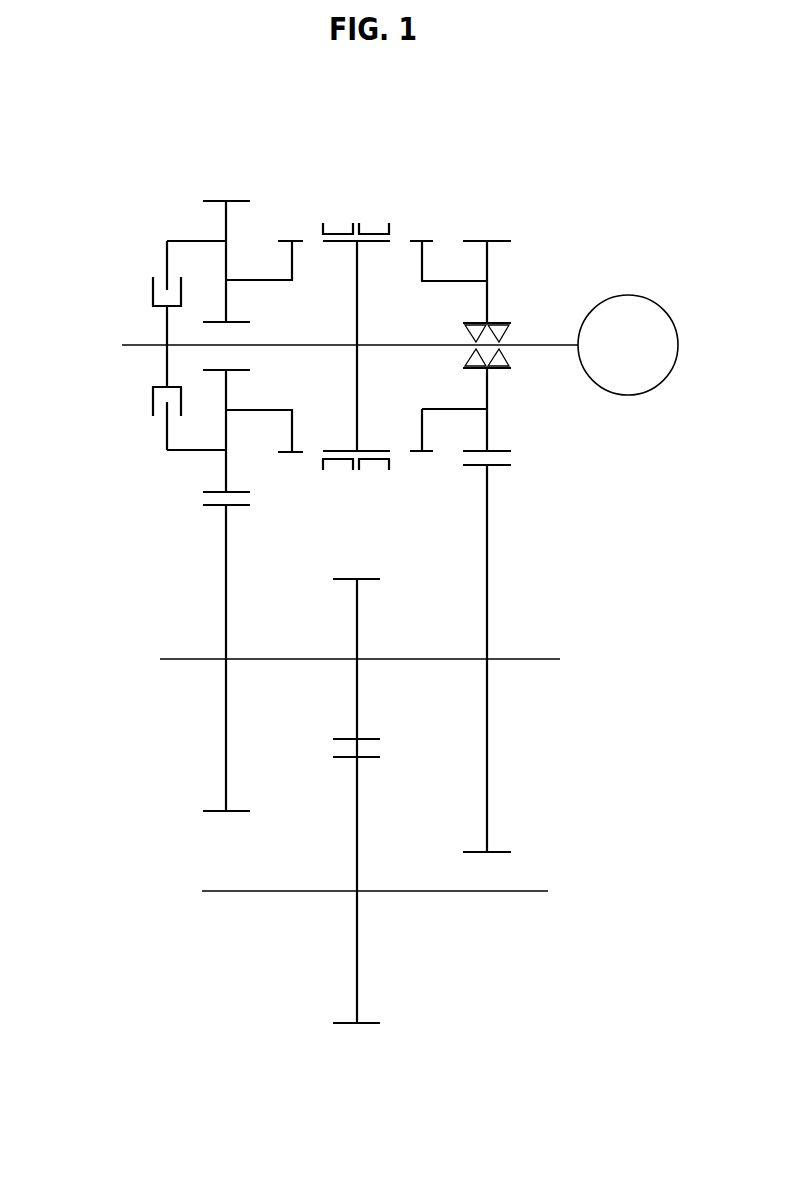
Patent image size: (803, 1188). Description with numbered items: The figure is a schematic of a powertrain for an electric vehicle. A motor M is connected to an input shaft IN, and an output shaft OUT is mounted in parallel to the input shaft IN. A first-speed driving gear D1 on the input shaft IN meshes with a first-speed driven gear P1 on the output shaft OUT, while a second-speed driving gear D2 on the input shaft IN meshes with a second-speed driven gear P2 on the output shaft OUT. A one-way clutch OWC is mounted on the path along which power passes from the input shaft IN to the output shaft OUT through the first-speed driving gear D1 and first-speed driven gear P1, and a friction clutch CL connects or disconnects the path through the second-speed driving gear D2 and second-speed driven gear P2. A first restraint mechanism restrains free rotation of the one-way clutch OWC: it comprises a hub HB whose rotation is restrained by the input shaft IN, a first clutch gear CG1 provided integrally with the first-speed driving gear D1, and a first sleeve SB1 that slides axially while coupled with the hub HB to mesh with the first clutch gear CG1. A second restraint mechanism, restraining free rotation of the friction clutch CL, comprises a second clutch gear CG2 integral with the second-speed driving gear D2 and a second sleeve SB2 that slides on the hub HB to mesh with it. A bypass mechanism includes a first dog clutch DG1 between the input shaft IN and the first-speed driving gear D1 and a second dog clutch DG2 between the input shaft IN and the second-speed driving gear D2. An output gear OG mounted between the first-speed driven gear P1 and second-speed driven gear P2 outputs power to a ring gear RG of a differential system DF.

The input shaft IN is at (138, 347).
The friction clutch CL is at (153, 290).
The second-speed driving gear D2 is at (213, 200).
The second clutch gear CG2 is at (285, 240).
The second dog clutch DG2 is at (318, 182).
The second sleeve SB2 is at (338, 232).
The first sleeve SB1 is at (377, 232).
The hub HB is at (357, 298).
The first dog clutch DG1 is at (422, 184).
The first clutch gear CG1 is at (432, 240).
The first-speed driving gear D1 is at (503, 240).
The one-way clutch OWC is at (508, 333).
The motor M is at (628, 345).
The output gear OG is at (345, 578).
The output shaft OUT is at (173, 657).
The second-speed driven gear P2 is at (208, 810).
The first-speed driven gear P1 is at (505, 851).
The ring gear RG is at (341, 1022).
The differential system DF is at (402, 941).